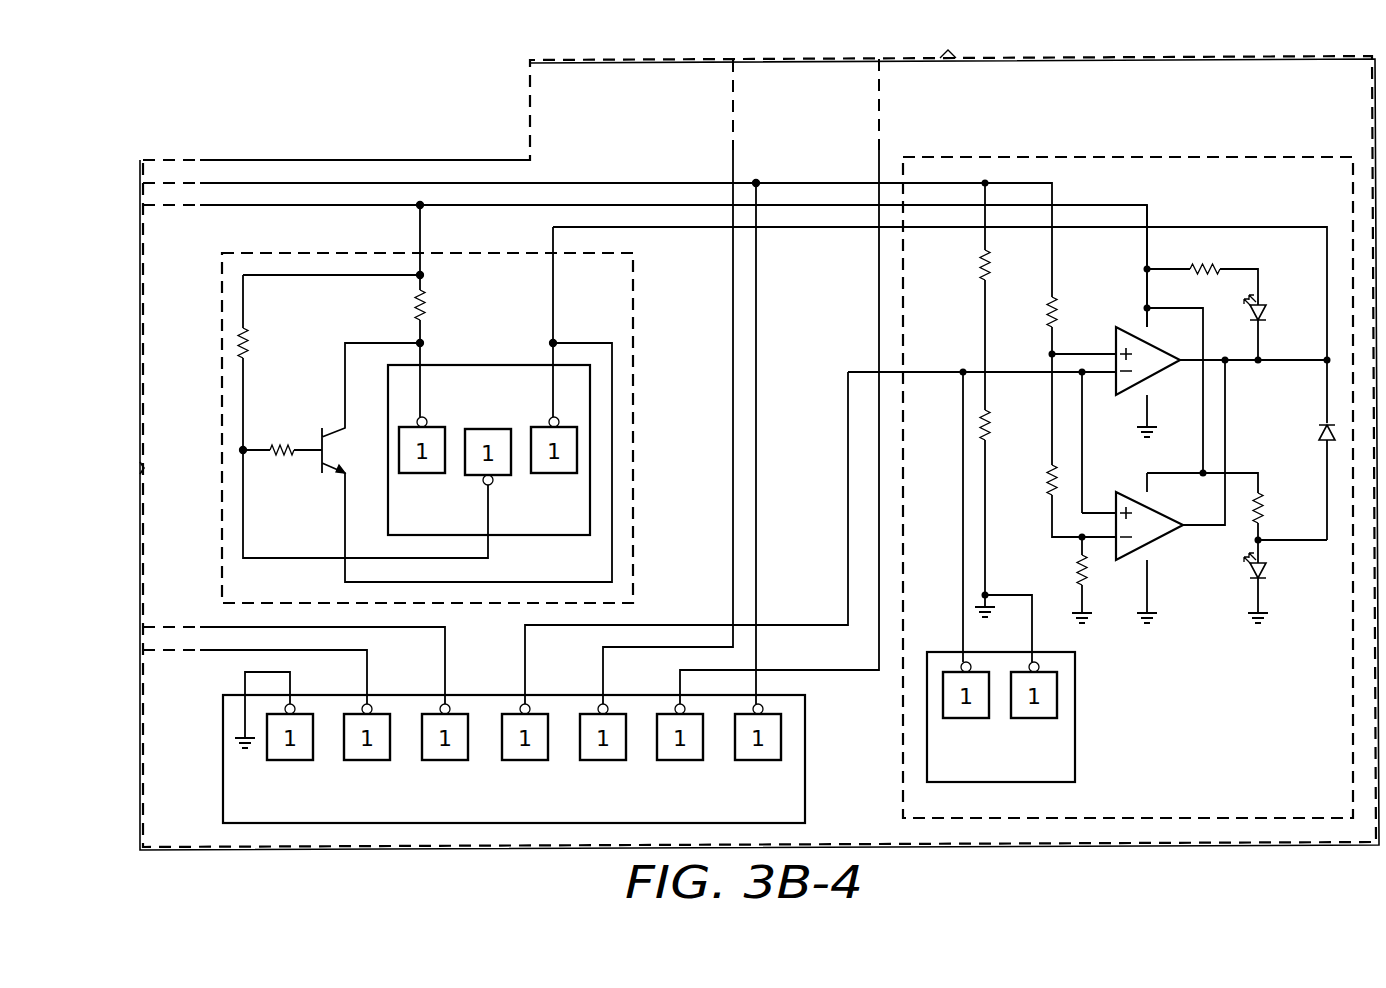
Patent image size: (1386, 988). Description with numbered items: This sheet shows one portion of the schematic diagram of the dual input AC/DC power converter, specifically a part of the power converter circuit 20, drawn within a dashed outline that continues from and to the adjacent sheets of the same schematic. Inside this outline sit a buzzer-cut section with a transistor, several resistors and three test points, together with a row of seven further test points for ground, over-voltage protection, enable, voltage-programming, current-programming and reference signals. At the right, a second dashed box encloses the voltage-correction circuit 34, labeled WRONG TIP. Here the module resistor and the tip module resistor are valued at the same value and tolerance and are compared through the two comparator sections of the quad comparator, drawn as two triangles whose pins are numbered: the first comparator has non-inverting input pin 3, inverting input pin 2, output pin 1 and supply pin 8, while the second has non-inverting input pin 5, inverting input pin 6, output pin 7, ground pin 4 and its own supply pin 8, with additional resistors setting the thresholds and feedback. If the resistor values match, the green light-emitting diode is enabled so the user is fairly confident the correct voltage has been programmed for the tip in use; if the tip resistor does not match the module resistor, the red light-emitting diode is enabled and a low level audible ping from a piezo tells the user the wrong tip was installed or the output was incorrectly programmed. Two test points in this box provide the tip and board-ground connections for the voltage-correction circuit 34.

The power converter circuit 20 is at (413, 119).
The voltage-correction circuit 34 is at (903, 733).
The comparator output pin 1 is at (1202, 348).
The comparator inverting input pin 2 is at (1099, 385).
The comparator non-inverting input pin 3 is at (1084, 340).
The comparator ground pin 4 is at (1155, 504).
The comparator non-inverting input pin 5 is at (1099, 502).
The comparator inverting input pin 6 is at (1099, 549).
The comparator output pin 7 is at (1204, 513).
The comparator supply pin 8 is at (1154, 407).